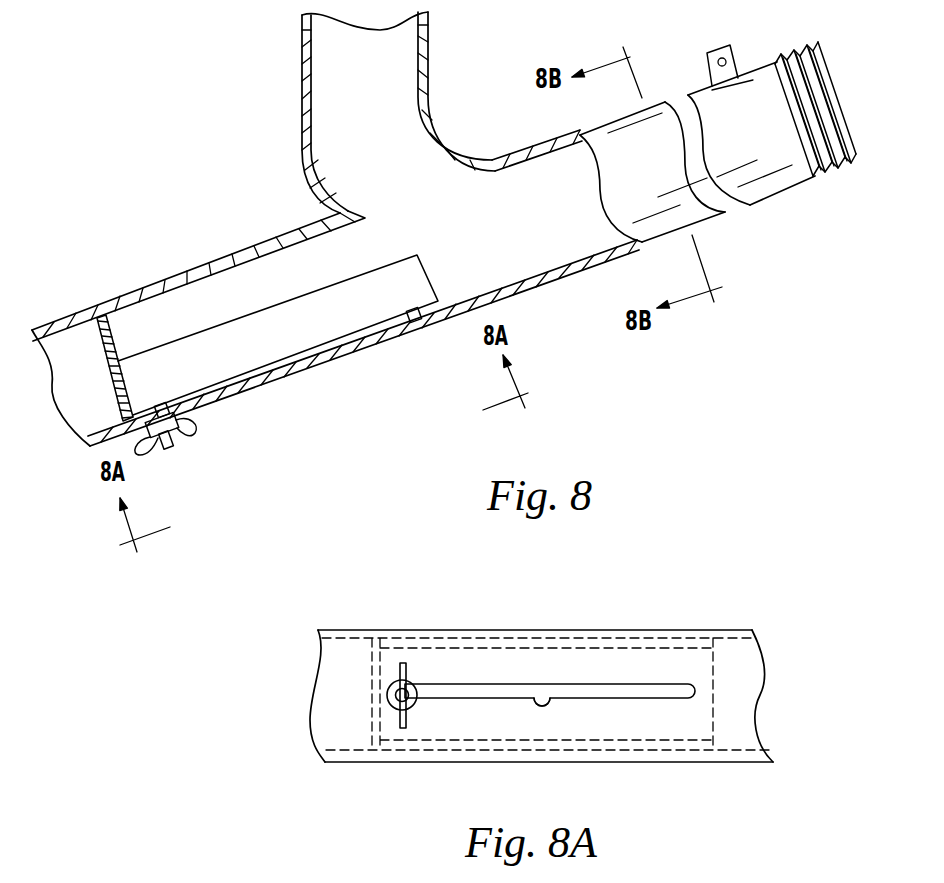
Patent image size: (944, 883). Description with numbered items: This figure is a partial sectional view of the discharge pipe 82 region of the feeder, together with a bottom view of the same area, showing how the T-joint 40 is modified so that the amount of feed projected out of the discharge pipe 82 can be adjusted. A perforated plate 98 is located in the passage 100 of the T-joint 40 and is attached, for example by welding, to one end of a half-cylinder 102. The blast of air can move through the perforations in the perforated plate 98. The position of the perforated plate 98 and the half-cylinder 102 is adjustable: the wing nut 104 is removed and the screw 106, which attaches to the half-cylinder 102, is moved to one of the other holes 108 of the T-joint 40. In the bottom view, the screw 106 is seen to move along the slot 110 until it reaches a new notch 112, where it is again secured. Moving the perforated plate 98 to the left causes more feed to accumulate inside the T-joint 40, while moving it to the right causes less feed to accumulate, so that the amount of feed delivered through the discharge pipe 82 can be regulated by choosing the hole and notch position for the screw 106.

In FIG. 8, the T-joint 40 is at (302, 73).
In FIG. 8, the discharge pipe 82 is at (816, 138).
In FIG. 8, the perforated plate 98 is at (110, 330).
In FIG. 8A, the perforated plate 98 is at (372, 677).
In FIG. 8, the passage 100 is at (94, 392).
In FIG. 8, the half-cylinder 102 is at (312, 337).
In FIG. 8A, the half-cylinder 102 is at (717, 667).
In FIG. 8, the wing nut 104 is at (192, 432).
In FIG. 8A, the wing nut 104 is at (407, 681).
In FIG. 8, the screw 106 is at (168, 449).
In FIG. 8A, the screw 106 is at (403, 701).
In FIG. 8, the holes 108 is at (158, 403).
In FIG. 8A, the slot 110 is at (609, 684).
In FIG. 8A, the notch 112 is at (685, 705).